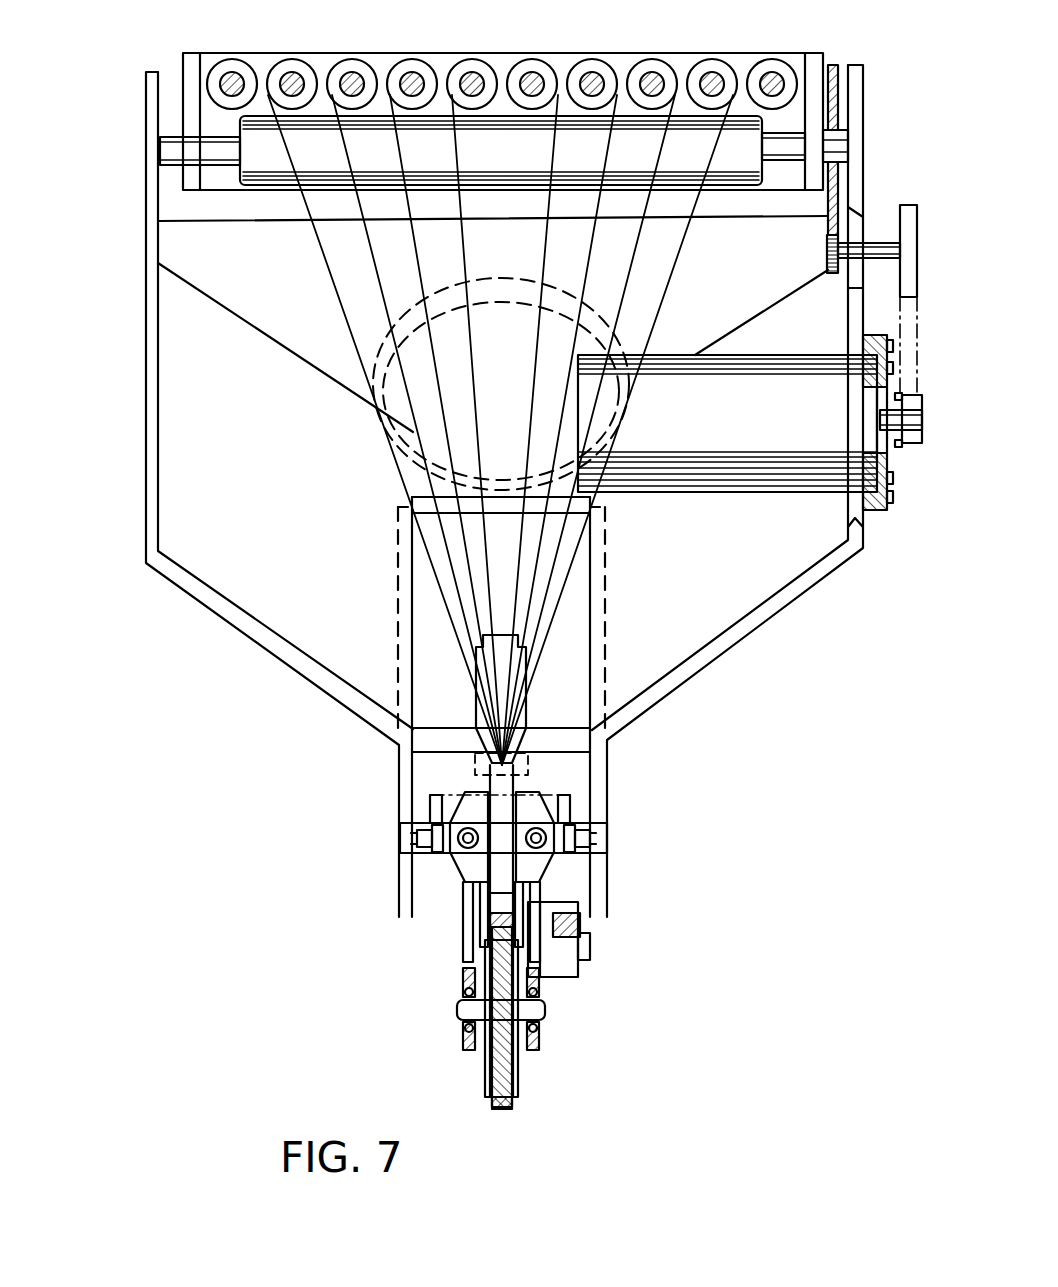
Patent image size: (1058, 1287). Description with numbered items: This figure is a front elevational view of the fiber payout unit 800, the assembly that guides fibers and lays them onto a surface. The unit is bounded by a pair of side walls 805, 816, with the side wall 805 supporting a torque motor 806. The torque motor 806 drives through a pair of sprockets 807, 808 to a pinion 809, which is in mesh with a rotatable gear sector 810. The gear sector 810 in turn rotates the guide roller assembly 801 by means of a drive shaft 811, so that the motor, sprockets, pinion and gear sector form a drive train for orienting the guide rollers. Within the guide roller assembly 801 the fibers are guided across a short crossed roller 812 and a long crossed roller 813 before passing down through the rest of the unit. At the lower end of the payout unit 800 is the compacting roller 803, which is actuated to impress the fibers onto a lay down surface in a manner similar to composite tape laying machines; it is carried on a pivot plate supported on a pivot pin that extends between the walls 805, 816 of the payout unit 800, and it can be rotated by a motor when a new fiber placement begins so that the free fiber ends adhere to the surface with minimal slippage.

The fiber payout unit 800 is at (698, 704).
The guide roller assembly 801 is at (672, 53).
The compacting roller 803 is at (503, 1110).
The side wall 805 is at (937, 575).
The torque motor 806 is at (762, 490).
The sprocket 807 is at (908, 445).
The sprocket 808 is at (908, 205).
The pinion 809 is at (827, 255).
The gear sector 810 is at (827, 215).
The drive shaft 811 is at (848, 140).
The short crossed roller 812 is at (352, 53).
The long crossed roller 813 is at (280, 190).
The side wall 816 is at (144, 536).